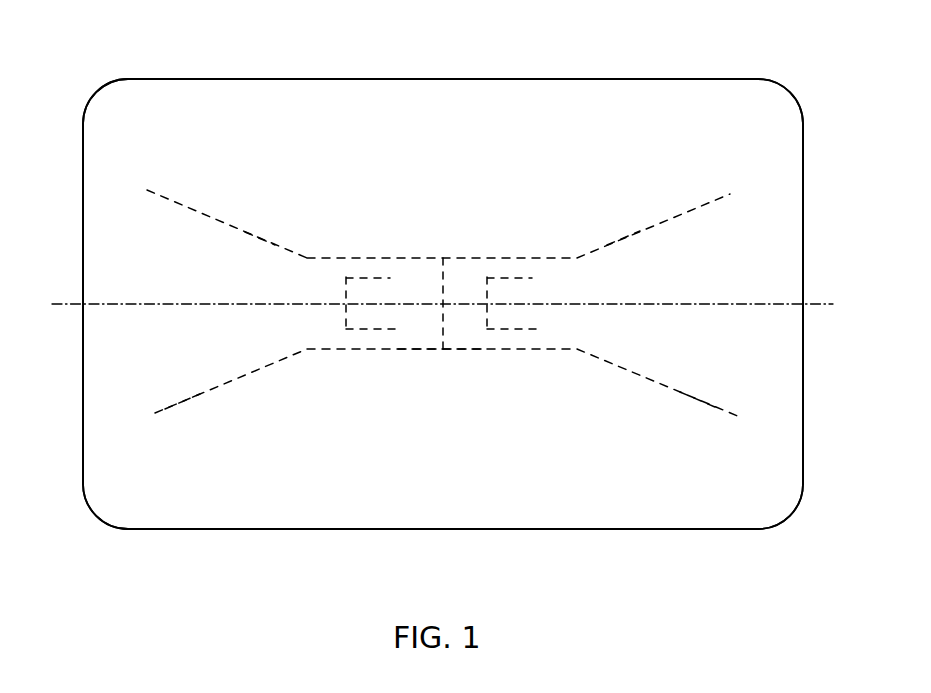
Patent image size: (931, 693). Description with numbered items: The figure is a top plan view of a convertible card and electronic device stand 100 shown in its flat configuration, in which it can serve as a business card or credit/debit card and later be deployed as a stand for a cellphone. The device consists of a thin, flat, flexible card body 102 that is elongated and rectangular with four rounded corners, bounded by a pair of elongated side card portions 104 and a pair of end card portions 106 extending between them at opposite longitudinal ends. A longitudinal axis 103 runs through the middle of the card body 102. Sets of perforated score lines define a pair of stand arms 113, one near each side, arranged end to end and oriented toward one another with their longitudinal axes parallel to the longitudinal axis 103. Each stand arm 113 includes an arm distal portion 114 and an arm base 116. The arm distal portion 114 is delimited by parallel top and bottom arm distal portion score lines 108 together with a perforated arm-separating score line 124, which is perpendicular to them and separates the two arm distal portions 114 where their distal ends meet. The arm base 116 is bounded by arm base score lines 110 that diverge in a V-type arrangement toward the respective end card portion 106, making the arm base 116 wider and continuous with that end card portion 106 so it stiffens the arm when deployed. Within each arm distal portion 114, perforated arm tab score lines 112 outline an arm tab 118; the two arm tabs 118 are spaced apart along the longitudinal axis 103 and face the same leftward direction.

The convertible card and electronic device stand 100 is at (207, 56).
The card body 102 is at (264, 534).
The longitudinal axis 103 is at (742, 304).
The side card portions 104 is at (480, 90).
The end card portions 106 is at (97, 322).
The arm distal portion score lines 108 is at (400, 258).
The arm base score lines 110 is at (215, 218).
The arm tab score lines 112 is at (346, 290).
The stand arm 113 is at (263, 260).
The arm distal portion 114 is at (412, 340).
The arm base 116 is at (182, 385).
The arm tab 118 is at (372, 320).
The arm-separating score line 124 is at (442, 297).